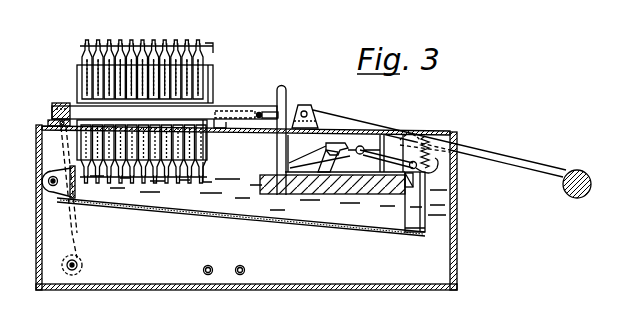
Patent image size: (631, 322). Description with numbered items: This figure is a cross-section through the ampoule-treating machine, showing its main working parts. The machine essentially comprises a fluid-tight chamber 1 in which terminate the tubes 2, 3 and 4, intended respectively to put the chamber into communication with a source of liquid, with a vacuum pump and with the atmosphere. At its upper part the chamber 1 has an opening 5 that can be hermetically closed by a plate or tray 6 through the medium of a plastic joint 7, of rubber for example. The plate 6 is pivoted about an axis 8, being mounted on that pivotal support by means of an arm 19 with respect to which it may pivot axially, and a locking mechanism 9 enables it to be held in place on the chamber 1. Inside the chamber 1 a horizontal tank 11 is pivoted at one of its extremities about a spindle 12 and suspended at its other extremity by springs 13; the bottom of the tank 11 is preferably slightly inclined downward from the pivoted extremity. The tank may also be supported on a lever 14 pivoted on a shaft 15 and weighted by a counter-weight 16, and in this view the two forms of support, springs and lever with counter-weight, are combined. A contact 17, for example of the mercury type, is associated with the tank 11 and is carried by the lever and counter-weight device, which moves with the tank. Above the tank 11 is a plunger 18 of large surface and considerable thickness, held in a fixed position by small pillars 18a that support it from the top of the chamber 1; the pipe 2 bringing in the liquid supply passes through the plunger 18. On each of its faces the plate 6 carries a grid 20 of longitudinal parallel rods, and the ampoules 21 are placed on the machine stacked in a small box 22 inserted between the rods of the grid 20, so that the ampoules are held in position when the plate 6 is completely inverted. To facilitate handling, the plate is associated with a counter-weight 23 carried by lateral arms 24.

The fluid-tight chamber 1 is at (457, 195).
The tube 2 is at (290, 108).
The tube 3 is at (246, 259).
The tube 4 is at (210, 265).
The opening 5 is at (220, 128).
The plate 6 is at (78, 113).
The plastic joint 7 is at (57, 124).
The axis 8 is at (310, 106).
The locking mechanism 9 is at (70, 238).
The horizontal tank 11 is at (262, 217).
The spindle 12 is at (45, 182).
The springs 13 is at (437, 137).
The lever 14 is at (407, 133).
The shaft 15 is at (363, 143).
The counter-weight 16 is at (318, 165).
The contact 17 is at (337, 143).
The plunger 18 is at (404, 186).
The small pillars 18a is at (400, 128).
The arm 19 is at (253, 109).
The grid 20 is at (202, 48).
The ampoules 21 is at (88, 58).
The small box 22 is at (78, 72).
The counter-weight 23 is at (578, 170).
The lateral arms 24 is at (510, 167).